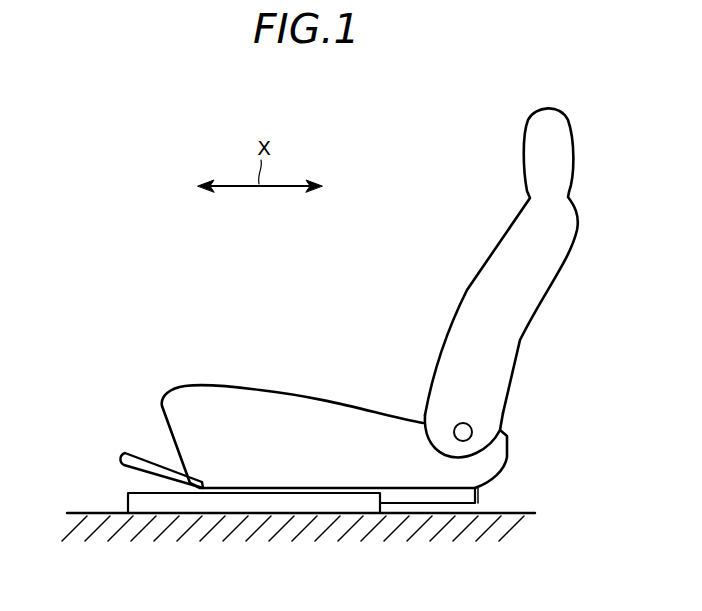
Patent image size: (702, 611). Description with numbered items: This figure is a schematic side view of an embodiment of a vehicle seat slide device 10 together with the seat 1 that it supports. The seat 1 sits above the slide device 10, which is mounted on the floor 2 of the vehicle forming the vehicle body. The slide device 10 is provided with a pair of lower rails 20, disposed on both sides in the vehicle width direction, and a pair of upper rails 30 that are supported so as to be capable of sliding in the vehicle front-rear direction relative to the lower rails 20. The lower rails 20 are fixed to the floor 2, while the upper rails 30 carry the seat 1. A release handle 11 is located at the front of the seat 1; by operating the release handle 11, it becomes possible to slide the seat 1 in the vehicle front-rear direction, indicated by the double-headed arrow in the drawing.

The seat 1 is at (305, 406).
The floor 2 is at (82, 513).
The vehicle seat slide device 10 is at (434, 504).
The release handle 11 is at (143, 468).
The lower rail 20 is at (268, 507).
The upper rail 30 is at (475, 492).